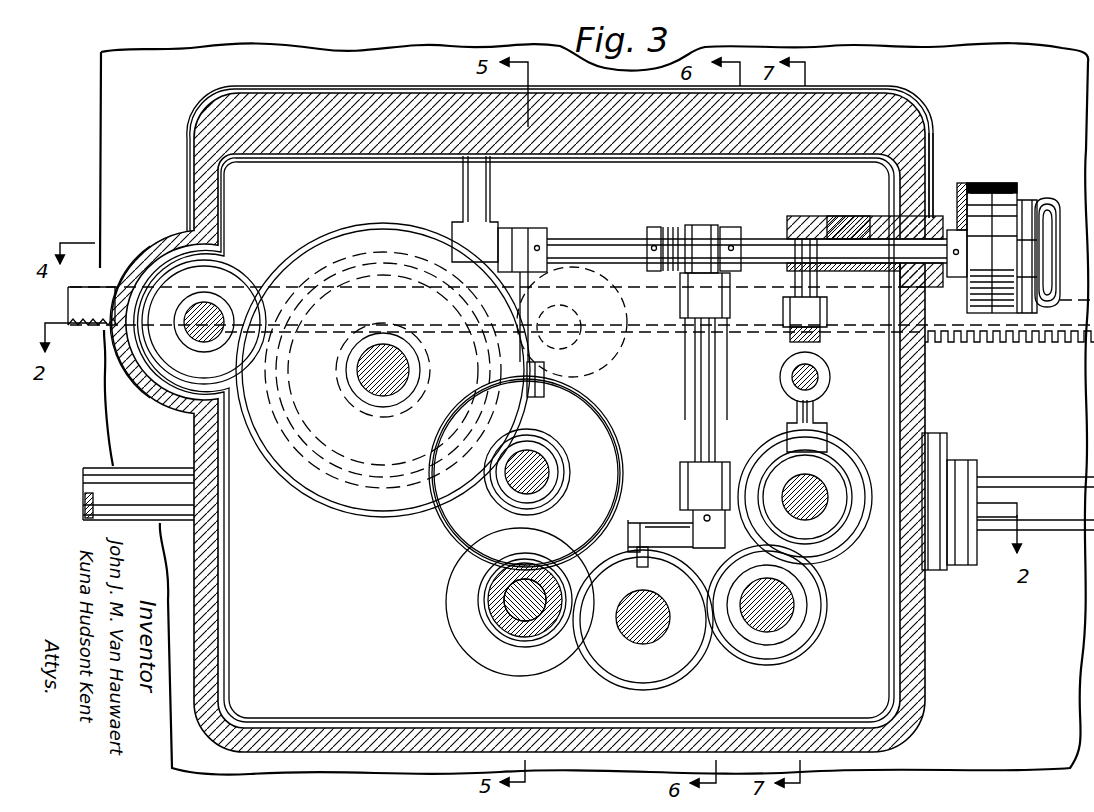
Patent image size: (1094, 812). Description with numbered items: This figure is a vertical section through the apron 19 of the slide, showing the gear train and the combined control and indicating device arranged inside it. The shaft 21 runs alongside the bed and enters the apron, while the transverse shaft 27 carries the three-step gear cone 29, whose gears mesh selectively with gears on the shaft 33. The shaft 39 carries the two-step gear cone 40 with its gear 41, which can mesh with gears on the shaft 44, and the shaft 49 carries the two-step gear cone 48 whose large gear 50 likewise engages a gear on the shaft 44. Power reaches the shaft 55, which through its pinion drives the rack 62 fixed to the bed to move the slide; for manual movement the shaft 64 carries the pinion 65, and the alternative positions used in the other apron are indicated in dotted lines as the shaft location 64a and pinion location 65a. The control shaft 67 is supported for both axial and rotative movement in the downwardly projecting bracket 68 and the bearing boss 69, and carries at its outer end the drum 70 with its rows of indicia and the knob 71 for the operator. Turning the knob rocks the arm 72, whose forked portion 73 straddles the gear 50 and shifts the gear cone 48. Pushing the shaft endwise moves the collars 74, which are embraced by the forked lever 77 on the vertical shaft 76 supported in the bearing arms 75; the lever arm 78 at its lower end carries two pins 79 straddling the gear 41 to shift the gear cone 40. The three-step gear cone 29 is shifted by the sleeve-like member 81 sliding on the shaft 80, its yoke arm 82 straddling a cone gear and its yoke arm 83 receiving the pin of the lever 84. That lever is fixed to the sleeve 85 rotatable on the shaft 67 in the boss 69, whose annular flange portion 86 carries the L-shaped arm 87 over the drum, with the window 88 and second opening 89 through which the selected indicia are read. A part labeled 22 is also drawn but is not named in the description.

The apron 19 is at (912, 686).
The shaft 21 is at (1020, 483).
The rod 22 is at (522, 355).
The shaft 27 is at (826, 482).
The three-step gear cone 29 is at (823, 516).
The shaft 33 is at (785, 620).
The shaft 39 is at (650, 622).
The two-step gear cone 40 is at (672, 660).
The gear 41 is at (590, 663).
The shaft 44 is at (505, 602).
The two-step gear cone 48 is at (470, 505).
The shaft 49 is at (548, 474).
The gear 50 is at (600, 440).
The shaft 55 is at (372, 396).
The rack 62 is at (86, 330).
The shaft 64 is at (215, 292).
The shaft location 64a is at (566, 318).
The pinion 65 is at (230, 262).
The pinion location 65a is at (586, 322).
The shaft 67 is at (757, 240).
The bracket 68 is at (492, 210).
The bearing boss 69 is at (872, 216).
The drum 70 is at (1028, 200).
The knob 71 is at (1060, 216).
The arm 72 is at (540, 230).
The forked portion 73 is at (544, 392).
The collars 74 is at (654, 227).
The bearing arms 75 is at (731, 310).
The shaft 76 is at (716, 378).
The forked lever 77 is at (695, 225).
The lever arm 78 is at (672, 523).
The pins 79 is at (648, 558).
The shaft 80 is at (826, 364).
The sleeve-like member 81 is at (818, 378).
The yoke arm 82 is at (826, 428).
The yoke arm 83 is at (828, 312).
The lever 84 is at (794, 286).
The sleeve 85 is at (845, 216).
The annular flange portion 86 is at (915, 200).
The L-shaped arm 87 is at (960, 183).
The window 88 is at (1006, 186).
The second opening 89 is at (980, 186).